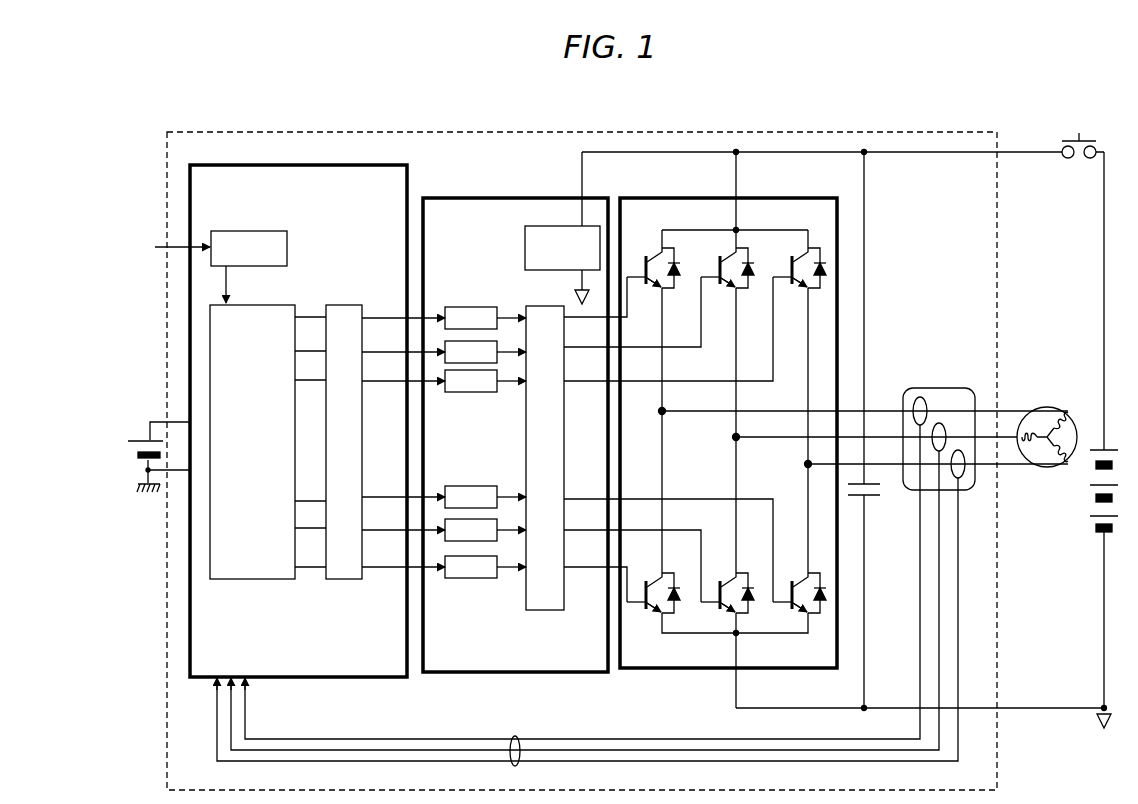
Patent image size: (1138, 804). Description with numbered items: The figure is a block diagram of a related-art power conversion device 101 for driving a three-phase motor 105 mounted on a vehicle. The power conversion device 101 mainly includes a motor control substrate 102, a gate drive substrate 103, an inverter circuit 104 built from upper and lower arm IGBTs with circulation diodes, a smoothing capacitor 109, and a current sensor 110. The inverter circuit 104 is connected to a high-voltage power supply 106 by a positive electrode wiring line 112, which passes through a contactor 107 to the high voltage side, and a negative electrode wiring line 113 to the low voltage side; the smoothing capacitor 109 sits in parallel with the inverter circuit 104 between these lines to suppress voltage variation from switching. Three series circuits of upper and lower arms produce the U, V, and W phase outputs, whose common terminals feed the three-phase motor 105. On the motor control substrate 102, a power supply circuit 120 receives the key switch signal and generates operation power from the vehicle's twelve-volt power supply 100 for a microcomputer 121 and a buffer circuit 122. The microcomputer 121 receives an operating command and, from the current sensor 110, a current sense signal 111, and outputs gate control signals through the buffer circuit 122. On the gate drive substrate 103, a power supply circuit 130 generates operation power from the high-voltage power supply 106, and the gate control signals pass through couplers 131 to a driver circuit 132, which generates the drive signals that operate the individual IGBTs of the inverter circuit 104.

The 12V power supply 100 is at (137, 432).
The power conversion device 101 is at (486, 132).
The motor control substrate 102 is at (374, 686).
The gate drive substrate 103 is at (480, 196).
The inverter circuit 104 is at (640, 198).
The three-phase motor 105 is at (1036, 394).
The high-voltage power supply 106 is at (1100, 546).
The contactor 107 is at (1075, 127).
The smoothing capacitor 109 is at (858, 510).
The current sensor 110 is at (928, 385).
The current sense signal 111 is at (517, 736).
The positive electrode wiring line 112 is at (1010, 150).
The negative electrode wiring line 113 is at (1018, 708).
The power supply circuit 120 is at (266, 230).
The microcomputer 121 is at (260, 586).
The buffer circuit 122 is at (348, 586).
The power supply circuit 130 is at (520, 238).
The couplers 131 is at (462, 305).
The driver circuit 132 is at (524, 608).